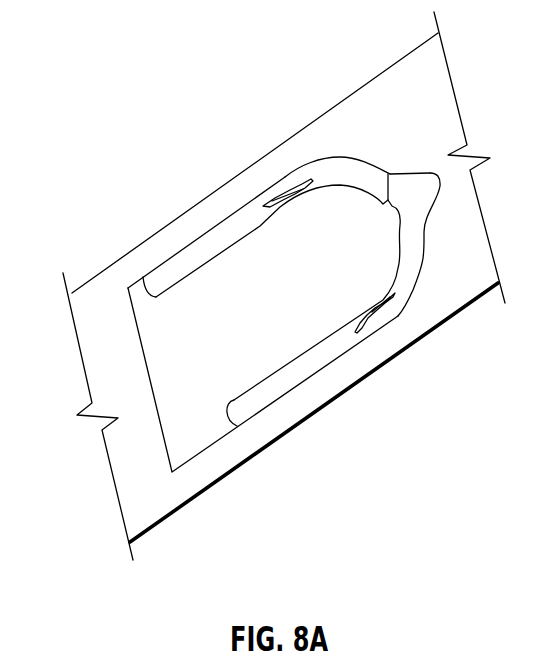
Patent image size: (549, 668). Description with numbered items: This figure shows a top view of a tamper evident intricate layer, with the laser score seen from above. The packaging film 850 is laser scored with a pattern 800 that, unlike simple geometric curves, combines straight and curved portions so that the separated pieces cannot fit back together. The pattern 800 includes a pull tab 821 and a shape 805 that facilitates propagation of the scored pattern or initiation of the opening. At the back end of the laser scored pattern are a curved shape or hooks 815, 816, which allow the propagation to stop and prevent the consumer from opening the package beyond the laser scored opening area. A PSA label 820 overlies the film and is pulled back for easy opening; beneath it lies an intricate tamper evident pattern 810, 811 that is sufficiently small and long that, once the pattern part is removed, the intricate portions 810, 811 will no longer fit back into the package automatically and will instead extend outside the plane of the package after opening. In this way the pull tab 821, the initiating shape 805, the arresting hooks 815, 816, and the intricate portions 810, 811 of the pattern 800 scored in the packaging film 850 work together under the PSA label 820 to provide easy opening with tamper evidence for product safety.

The pattern 800 is at (212, 258).
The shape 805 is at (382, 173).
The intricate tamper evident pattern 810 is at (290, 190).
The intricate tamper evident pattern 811 is at (383, 306).
The curved shape or hook 815 is at (131, 284).
The curved shape or hook 816 is at (233, 408).
The PSA label 820 is at (165, 343).
The pull tab 821 is at (431, 185).
The packaging film 850 is at (398, 90).